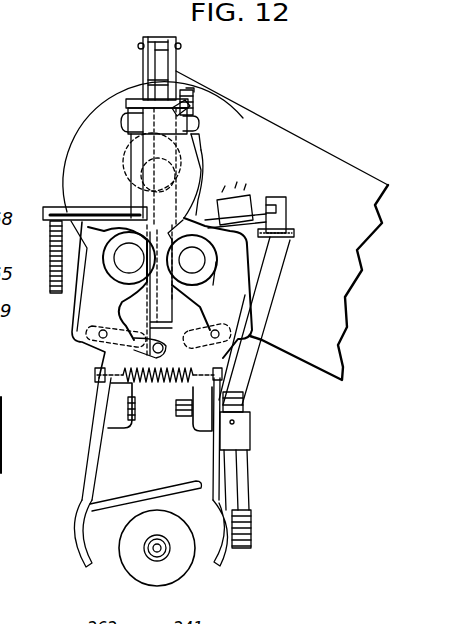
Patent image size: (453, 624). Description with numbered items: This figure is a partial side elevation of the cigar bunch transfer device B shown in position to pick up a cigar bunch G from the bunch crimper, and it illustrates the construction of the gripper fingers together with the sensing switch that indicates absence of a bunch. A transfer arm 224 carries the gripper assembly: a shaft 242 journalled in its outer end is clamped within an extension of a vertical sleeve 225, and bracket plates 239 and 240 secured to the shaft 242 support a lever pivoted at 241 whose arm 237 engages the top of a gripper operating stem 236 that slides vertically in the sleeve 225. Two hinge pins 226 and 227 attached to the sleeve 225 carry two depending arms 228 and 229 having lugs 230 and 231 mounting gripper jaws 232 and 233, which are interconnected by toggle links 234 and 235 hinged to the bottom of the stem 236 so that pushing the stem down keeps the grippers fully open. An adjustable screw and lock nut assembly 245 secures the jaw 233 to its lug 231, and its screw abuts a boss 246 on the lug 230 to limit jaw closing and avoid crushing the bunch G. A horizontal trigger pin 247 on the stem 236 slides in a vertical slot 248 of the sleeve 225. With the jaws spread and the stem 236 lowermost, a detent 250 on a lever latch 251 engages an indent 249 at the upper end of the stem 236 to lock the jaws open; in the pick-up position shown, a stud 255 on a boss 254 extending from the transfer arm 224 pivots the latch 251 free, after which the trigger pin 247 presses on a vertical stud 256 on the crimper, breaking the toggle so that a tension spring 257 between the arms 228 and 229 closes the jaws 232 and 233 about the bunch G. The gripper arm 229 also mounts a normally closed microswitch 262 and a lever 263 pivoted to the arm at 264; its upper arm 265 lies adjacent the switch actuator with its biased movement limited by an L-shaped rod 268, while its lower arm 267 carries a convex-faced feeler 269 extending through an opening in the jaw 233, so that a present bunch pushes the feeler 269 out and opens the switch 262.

The transfer arm 224 is at (283, 132).
The cigar bunch transfer device B is at (331, 140).
The arm of lever 237 is at (158, 46).
The bracket plate 239 is at (143, 70).
The bracket plate 240 is at (178, 66).
The lever pivot 241 is at (180, 40).
The gripper operating stem 236 is at (157, 116).
The boss 254 is at (133, 147).
The detent 250 is at (200, 123).
The stud 255 is at (192, 102).
The indent 249 is at (196, 116).
The lever latch 251 is at (201, 129).
The sleeve 225 is at (245, 138).
The shaft 242 is at (135, 157).
The vertical slot 248 is at (135, 177).
The trigger pin 247 is at (84, 210).
The vertical stud 256 is at (46, 207).
The hinge pin 226 is at (112, 270).
The depending arm 228 is at (82, 343).
The hinge pin 227 is at (219, 266).
The microswitch 262 is at (246, 196).
The upper arm of lever 265 is at (286, 214).
The L-shaped rod 268 is at (294, 234).
The lever 263 is at (283, 312).
The depending arm 229 is at (230, 343).
The adjustable screw and lock nut assembly 245 is at (243, 403).
The lever pivot 264 is at (250, 430).
The lower arm of lever 267 is at (247, 467).
The feeler 269 is at (252, 524).
The toggle link 234 is at (132, 326).
The toggle link 235 is at (183, 333).
The tension spring 257 is at (158, 384).
The lug 230 is at (112, 428).
The boss 246 is at (124, 420).
The lug 231 is at (203, 432).
The gripper jaw 232 is at (80, 556).
The gripper jaw 233 is at (233, 563).
The cigar bunch G is at (176, 578).